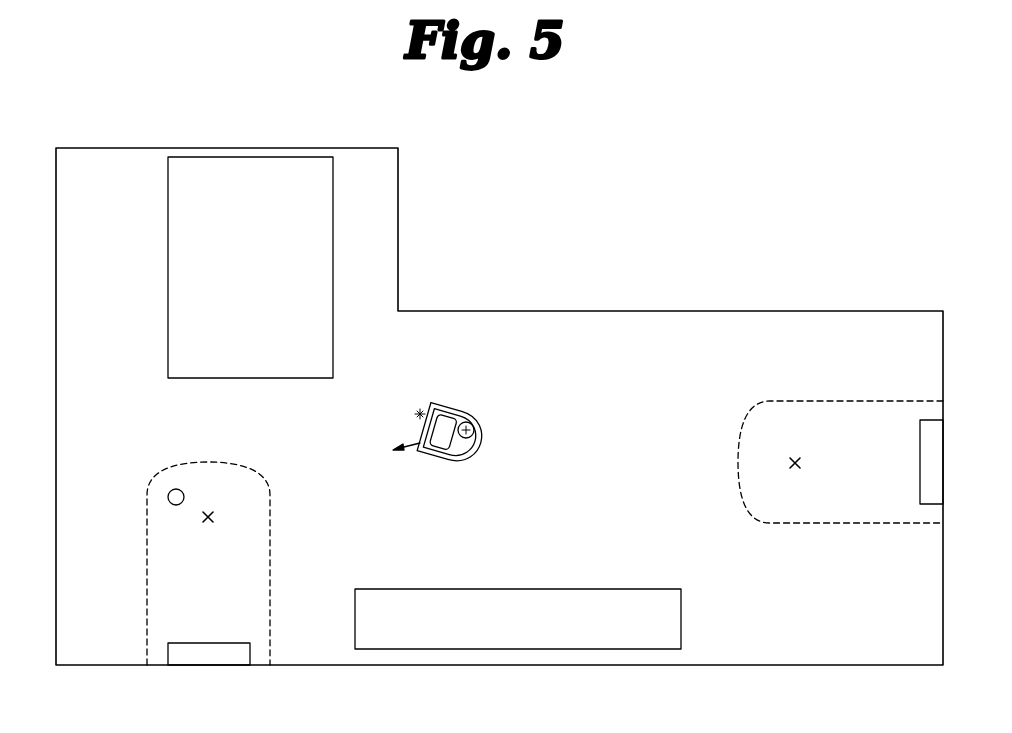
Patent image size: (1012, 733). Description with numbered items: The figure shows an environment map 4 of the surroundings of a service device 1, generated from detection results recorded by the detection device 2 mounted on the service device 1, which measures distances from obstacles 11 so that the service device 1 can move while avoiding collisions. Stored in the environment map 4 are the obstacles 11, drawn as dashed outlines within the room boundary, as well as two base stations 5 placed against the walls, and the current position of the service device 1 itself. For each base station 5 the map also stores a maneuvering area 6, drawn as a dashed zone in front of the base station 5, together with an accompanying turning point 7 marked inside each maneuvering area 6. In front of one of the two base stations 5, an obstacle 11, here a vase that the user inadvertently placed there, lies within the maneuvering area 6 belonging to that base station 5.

The service device 1 is at (418, 401).
The detection device 2 is at (475, 430).
The environment map 4 is at (660, 228).
The base station 5 is at (180, 656).
The maneuvering area 6 is at (160, 559).
The target point / position 7 is at (203, 518).
The obstacle 11 is at (170, 491).